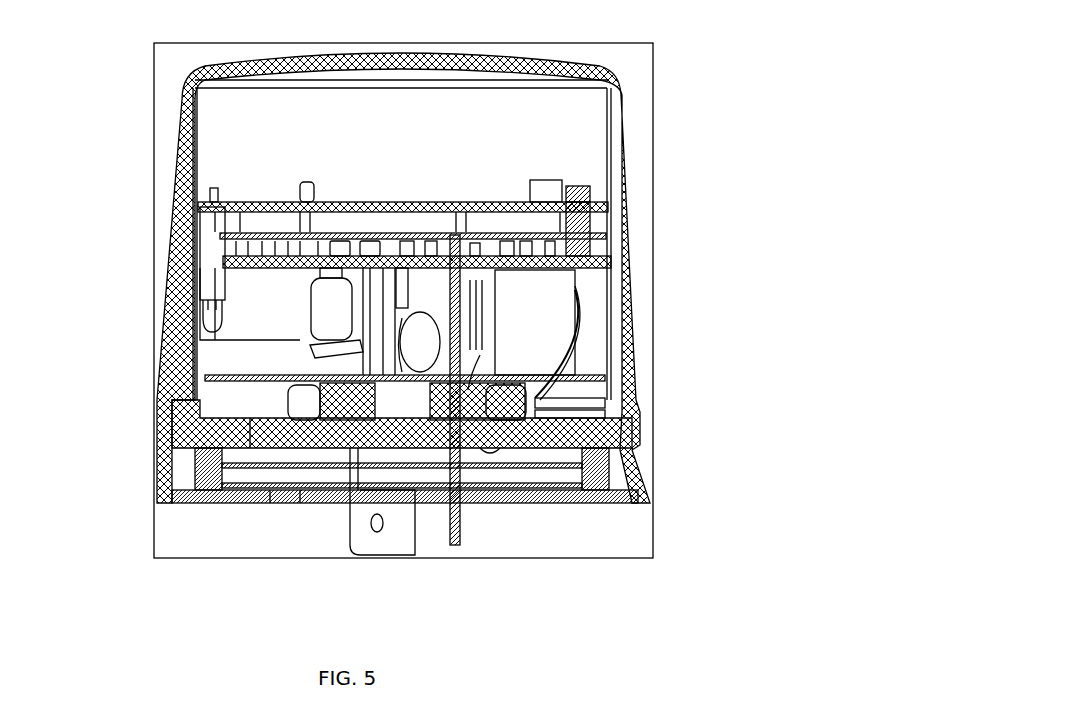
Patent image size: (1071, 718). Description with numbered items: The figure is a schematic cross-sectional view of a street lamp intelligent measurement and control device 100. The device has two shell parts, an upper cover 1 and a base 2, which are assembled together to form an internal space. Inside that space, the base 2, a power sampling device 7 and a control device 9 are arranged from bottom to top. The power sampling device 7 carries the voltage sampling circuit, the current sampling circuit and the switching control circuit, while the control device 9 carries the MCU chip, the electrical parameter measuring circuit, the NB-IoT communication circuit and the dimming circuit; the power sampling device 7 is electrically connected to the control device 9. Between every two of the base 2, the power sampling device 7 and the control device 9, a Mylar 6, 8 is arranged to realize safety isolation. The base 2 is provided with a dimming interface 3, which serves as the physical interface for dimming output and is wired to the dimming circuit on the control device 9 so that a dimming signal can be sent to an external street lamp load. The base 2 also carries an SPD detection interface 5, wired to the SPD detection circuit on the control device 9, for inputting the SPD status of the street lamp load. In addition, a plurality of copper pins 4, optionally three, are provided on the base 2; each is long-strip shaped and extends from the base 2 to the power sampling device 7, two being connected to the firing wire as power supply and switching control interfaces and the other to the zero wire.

The street lamp intelligent measurement and control device 100 is at (168, 83).
The upper cover 1 is at (162, 383).
The base 2 is at (270, 448).
The dimming interface 3 is at (315, 448).
The copper pins 4 is at (455, 543).
The SPD detection interface 5 is at (490, 450).
The Mylar 6 is at (600, 377).
The power sampling device 7 is at (603, 268).
The Mylar 8 is at (606, 235).
The control device 9 is at (600, 197).